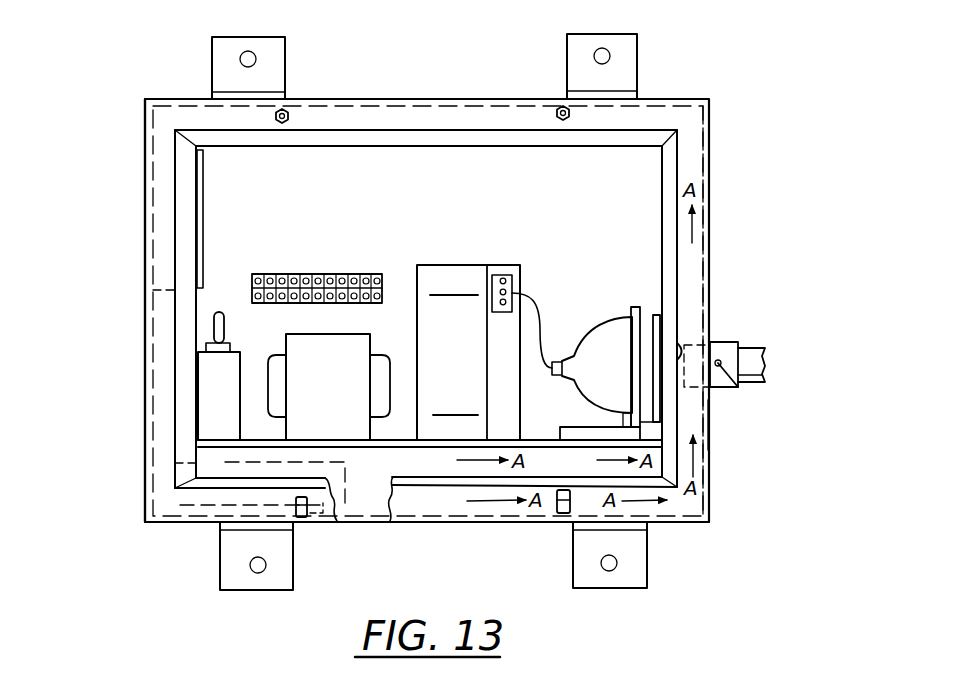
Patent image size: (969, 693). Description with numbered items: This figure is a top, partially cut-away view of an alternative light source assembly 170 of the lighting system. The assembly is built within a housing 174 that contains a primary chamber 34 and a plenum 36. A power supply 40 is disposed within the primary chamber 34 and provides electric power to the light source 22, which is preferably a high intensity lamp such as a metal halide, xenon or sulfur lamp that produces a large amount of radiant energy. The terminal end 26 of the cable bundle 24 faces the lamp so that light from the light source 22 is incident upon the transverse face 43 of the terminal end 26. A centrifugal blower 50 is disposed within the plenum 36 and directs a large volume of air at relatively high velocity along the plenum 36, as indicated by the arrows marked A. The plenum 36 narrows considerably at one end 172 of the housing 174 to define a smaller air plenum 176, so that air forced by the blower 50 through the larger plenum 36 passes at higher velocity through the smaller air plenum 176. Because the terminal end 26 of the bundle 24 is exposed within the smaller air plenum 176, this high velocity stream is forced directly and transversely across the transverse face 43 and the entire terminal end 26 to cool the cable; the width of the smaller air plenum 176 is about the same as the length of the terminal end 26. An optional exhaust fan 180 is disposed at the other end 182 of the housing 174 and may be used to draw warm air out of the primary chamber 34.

The light source assembly 170 is at (749, 125).
The primary chamber 34 is at (411, 172).
The exhaust fan 180 is at (204, 231).
The plenum 36 is at (450, 518).
The power supply 40 is at (468, 375).
The light source 22 is at (588, 327).
The transverse face 43 is at (681, 340).
The terminal end 26 is at (699, 336).
The bundle 24 is at (758, 350).
The housing 174 is at (704, 421).
The smaller air plenum 176 is at (705, 427).
The end of housing 172 is at (714, 521).
The other end of housing 182 is at (146, 380).
The blower 50 is at (338, 508).